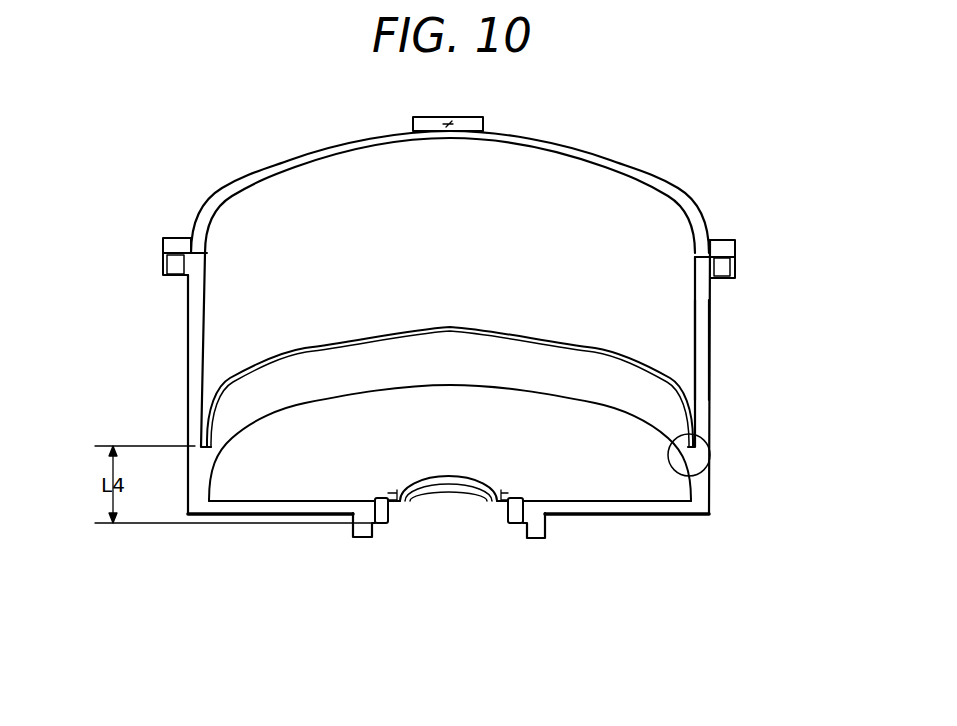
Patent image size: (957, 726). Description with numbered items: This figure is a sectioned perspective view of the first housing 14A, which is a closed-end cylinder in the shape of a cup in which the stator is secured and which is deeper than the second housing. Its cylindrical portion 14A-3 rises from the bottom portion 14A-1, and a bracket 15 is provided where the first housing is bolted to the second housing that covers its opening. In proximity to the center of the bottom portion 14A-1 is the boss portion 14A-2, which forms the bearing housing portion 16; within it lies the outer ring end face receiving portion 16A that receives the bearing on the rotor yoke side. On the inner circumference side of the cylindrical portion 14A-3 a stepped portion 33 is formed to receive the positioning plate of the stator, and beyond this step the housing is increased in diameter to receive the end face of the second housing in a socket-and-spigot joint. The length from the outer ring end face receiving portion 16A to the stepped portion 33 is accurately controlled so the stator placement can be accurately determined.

The first housing 14A is at (657, 179).
The bracket 15 is at (735, 246).
The cylindrical portion 14A-3 is at (710, 352).
The bottom portion 14A-1 is at (632, 516).
The boss portion 14A-2 is at (352, 539).
The outer ring end face receiving portion 16A is at (378, 531).
The bearing housing portion 16 is at (513, 527).
The stepped portion 33 is at (699, 458).